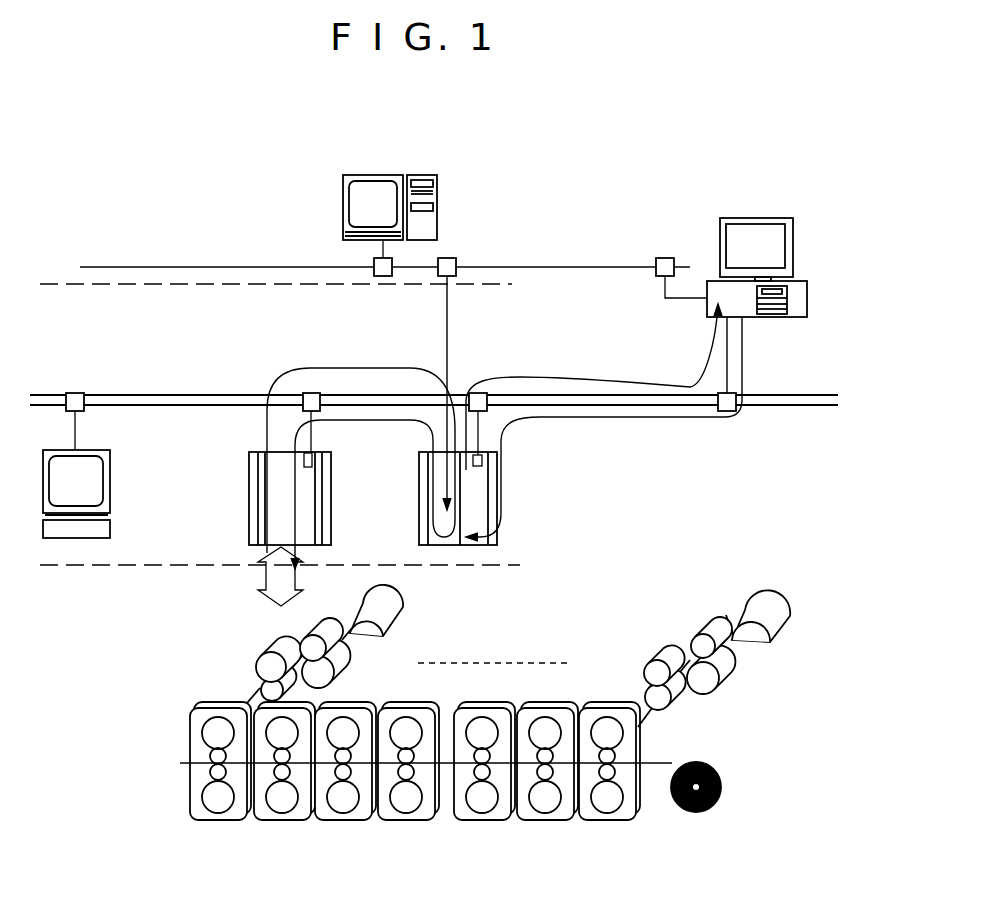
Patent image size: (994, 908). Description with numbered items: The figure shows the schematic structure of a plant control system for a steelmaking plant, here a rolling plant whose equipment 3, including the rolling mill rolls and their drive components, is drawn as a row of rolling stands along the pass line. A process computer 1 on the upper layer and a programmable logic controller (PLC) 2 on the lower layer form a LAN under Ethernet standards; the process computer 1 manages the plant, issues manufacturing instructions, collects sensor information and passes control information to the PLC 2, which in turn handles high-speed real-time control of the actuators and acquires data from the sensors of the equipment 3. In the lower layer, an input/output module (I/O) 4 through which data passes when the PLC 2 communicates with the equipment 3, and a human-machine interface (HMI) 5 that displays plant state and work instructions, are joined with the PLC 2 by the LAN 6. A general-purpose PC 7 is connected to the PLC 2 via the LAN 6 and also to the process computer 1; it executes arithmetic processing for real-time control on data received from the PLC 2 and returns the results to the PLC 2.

The process computer 1 is at (438, 207).
The programmable logic controller (PLC) 2 is at (500, 485).
The equipment 3 is at (500, 641).
The input/output module (I/O) 4 is at (333, 493).
The human-machine interface (HMI) 5 is at (112, 478).
The LAN 6 is at (215, 410).
The general-purpose personal computer (general-purpose PC) 7 is at (795, 243).